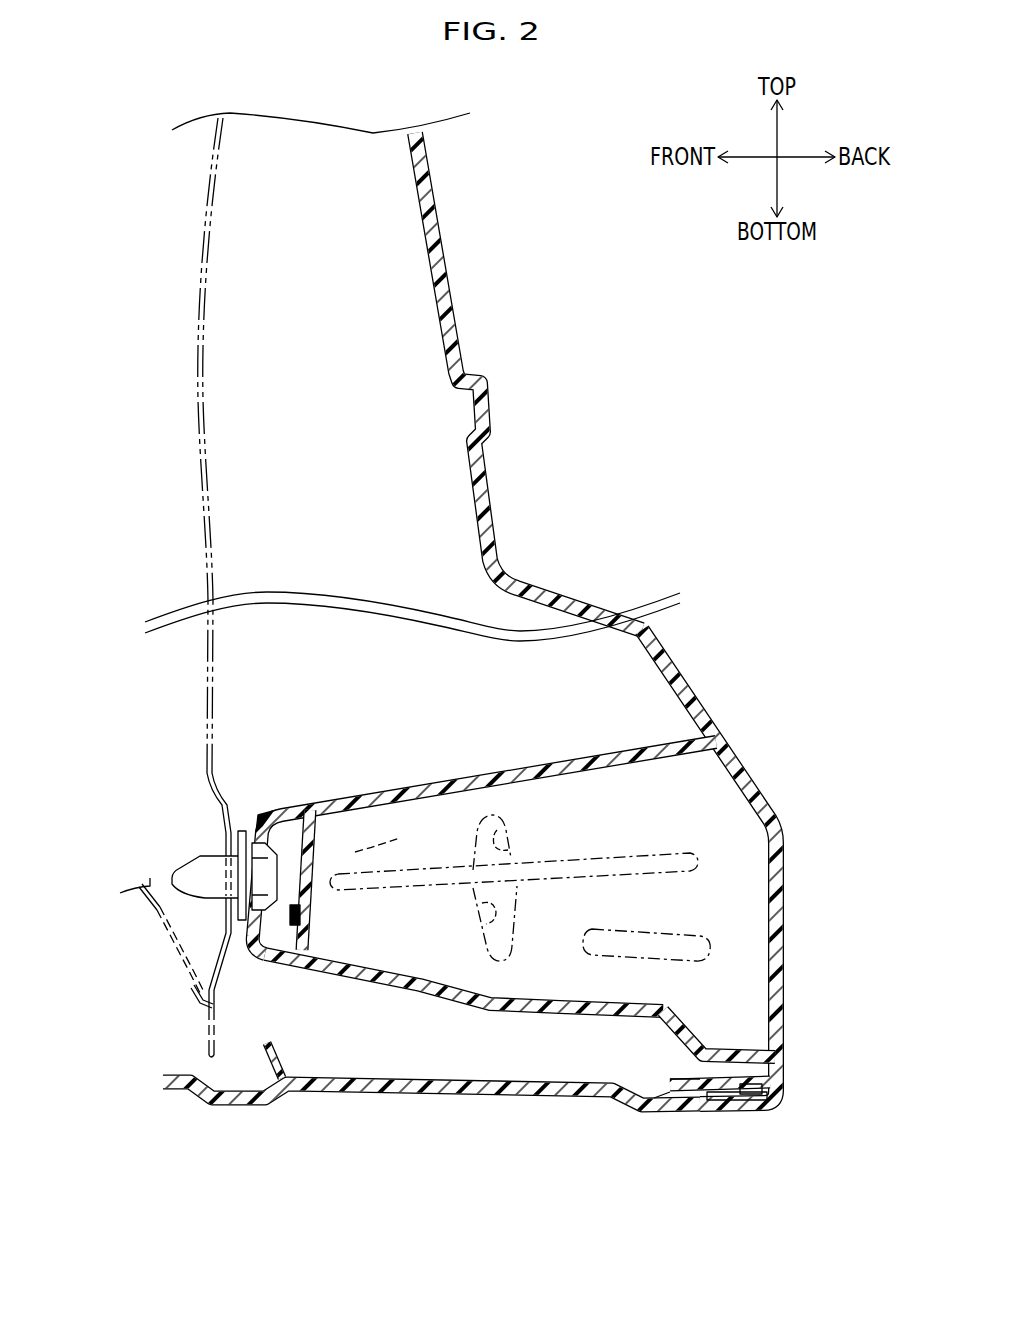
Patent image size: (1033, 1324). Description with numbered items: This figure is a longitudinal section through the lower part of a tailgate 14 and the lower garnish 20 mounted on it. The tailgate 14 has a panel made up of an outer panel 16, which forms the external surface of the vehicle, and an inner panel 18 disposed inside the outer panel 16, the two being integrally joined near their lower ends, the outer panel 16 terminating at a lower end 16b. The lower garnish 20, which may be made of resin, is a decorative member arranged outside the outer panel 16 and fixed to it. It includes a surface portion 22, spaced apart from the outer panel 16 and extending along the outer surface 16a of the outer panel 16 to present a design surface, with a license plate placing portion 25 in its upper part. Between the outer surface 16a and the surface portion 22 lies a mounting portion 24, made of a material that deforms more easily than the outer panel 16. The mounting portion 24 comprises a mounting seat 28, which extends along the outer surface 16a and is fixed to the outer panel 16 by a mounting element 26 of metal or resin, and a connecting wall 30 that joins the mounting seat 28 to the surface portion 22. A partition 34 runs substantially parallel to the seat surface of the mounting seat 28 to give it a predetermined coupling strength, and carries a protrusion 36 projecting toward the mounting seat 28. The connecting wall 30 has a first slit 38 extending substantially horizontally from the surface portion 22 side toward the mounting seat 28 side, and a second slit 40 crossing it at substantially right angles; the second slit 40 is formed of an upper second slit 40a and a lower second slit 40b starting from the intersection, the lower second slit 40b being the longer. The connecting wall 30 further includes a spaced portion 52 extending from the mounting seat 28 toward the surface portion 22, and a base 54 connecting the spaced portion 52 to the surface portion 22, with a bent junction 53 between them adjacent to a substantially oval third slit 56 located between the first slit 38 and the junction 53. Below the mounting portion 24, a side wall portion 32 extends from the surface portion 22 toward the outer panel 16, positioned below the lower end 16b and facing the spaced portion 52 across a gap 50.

The tailgate 14 is at (514, 166).
The outer panel 16 is at (211, 606).
The outer surface 16a is at (223, 810).
The lower end 16b is at (211, 1057).
The inner panel 18 is at (147, 903).
The lower garnish 20 is at (624, 618).
The surface portion 22 is at (783, 856).
The mounting portion 24 is at (498, 914).
The license plate placing portion 25 is at (443, 231).
The mounting element 26 is at (186, 862).
The mounting seat 28 is at (228, 934).
The connecting wall 30 is at (543, 876).
The side wall portion 32 is at (350, 1092).
The partition 34 is at (317, 842).
The protrusion 36 is at (303, 922).
The first slit 38 is at (400, 838).
The second slit 40 is at (520, 912).
The upper second slit 40a is at (522, 845).
The lower second slit 40b is at (466, 930).
The gap 50 is at (465, 1060).
The spaced portion 52 is at (403, 992).
The junction 53 is at (680, 1005).
The base 54 is at (683, 1042).
The third slit 56 is at (592, 962).